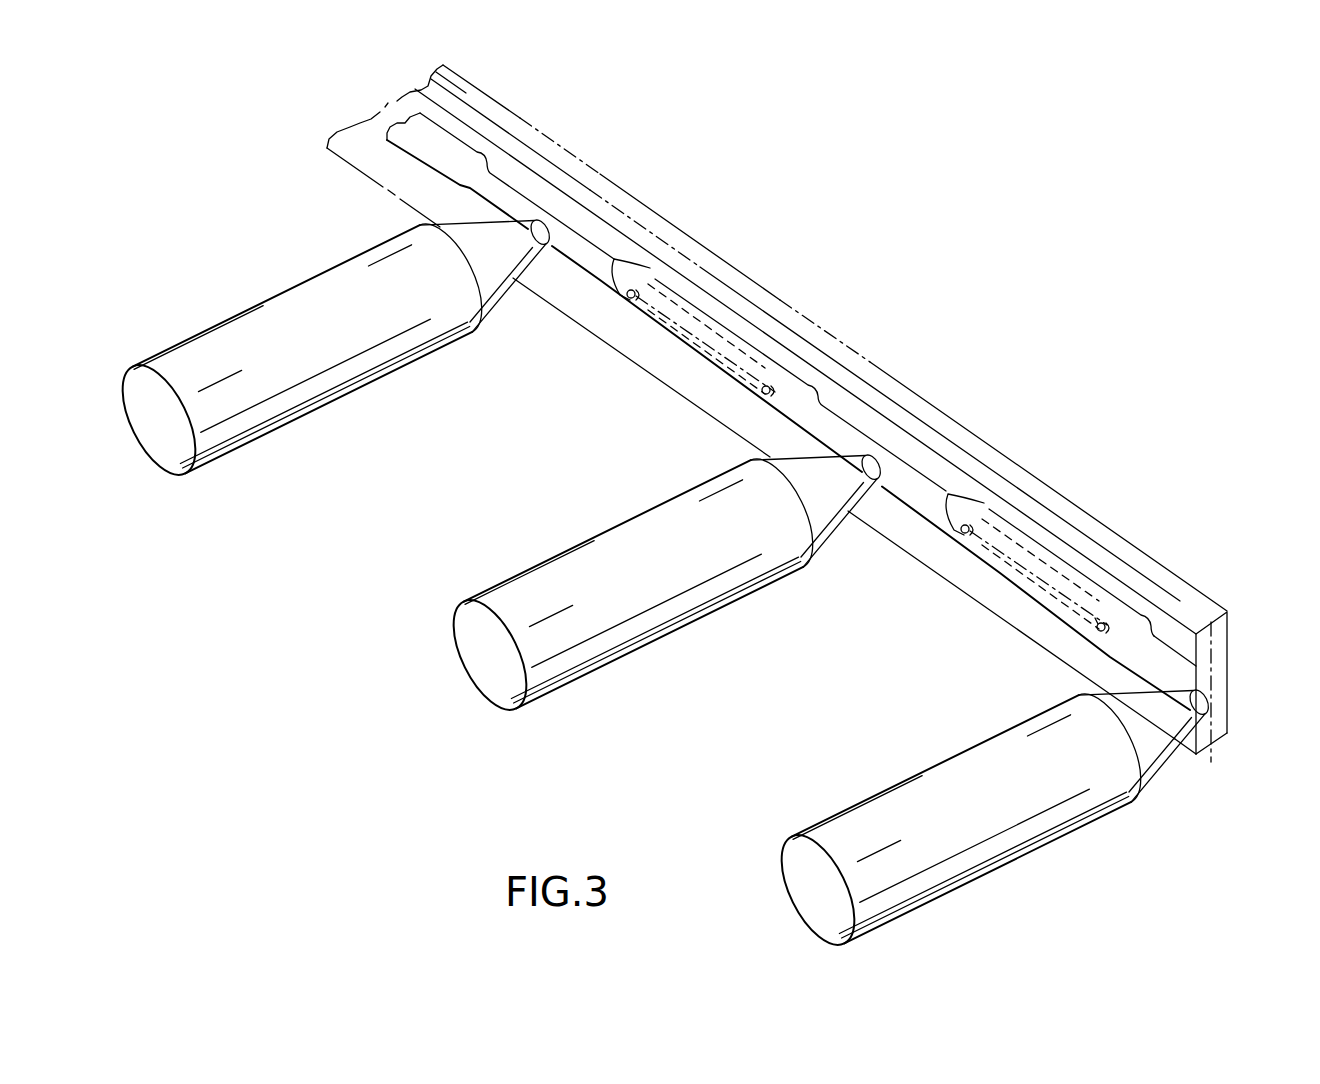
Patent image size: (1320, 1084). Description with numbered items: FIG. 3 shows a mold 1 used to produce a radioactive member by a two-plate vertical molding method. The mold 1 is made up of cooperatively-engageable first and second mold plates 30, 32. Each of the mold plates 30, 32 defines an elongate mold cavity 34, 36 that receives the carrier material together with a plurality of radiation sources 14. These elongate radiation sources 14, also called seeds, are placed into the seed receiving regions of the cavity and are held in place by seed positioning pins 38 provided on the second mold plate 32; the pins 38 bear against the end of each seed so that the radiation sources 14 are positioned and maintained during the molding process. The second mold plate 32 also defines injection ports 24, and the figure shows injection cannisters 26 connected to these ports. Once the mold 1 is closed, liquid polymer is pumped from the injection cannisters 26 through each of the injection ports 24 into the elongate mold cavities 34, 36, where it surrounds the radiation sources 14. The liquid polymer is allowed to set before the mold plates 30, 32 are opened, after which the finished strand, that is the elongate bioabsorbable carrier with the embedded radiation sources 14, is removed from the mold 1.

The mold 1 is at (1030, 333).
The radiation sources 14 is at (775, 300).
The injection ports 24 is at (876, 532).
The injection cannisters 26 is at (722, 604).
The first mold plate 30 is at (1222, 738).
The second mold plate 32 is at (1202, 762).
The elongate mold cavity 34 is at (963, 543).
The elongate mold cavity 36 is at (1052, 556).
The seed positioning pins 38 is at (760, 392).